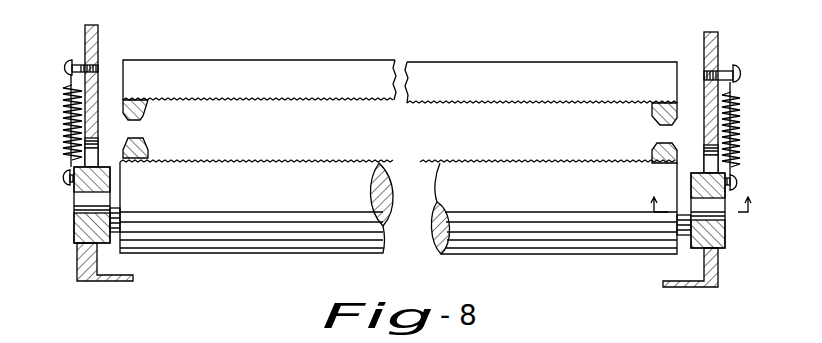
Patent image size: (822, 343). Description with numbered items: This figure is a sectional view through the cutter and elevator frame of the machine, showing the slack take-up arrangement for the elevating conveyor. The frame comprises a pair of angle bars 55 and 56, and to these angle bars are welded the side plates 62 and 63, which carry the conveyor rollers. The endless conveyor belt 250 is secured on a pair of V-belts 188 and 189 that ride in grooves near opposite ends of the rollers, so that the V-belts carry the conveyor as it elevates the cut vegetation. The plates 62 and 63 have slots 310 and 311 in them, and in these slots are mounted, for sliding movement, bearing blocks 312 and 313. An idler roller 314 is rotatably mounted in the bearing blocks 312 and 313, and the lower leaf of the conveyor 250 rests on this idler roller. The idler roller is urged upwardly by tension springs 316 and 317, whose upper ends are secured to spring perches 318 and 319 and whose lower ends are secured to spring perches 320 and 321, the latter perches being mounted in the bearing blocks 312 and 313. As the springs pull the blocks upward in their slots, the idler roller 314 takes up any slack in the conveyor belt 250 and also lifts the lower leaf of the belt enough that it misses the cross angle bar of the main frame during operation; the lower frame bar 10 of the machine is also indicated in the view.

The lower frame bar 10 is at (701, 207).
The angle bar 55 is at (116, 283).
The angle bar 56 is at (709, 288).
The plate 62 is at (98, 31).
The plate 63 is at (704, 40).
The V-belt 188 is at (652, 150).
The V-belt 189 is at (148, 112).
The endless conveyor belt 250 is at (542, 113).
The slot 310 is at (93, 158).
The slot 311 is at (704, 163).
The bearing block 312 is at (74, 232).
The bearing block 313 is at (726, 239).
The idler roller 314 is at (572, 248).
The tension spring 316 is at (63, 125).
The tension spring 317 is at (740, 125).
The spring perch 318 is at (64, 68).
The spring perch 319 is at (742, 73).
The spring perch 320 is at (62, 178).
The spring perch 321 is at (740, 184).